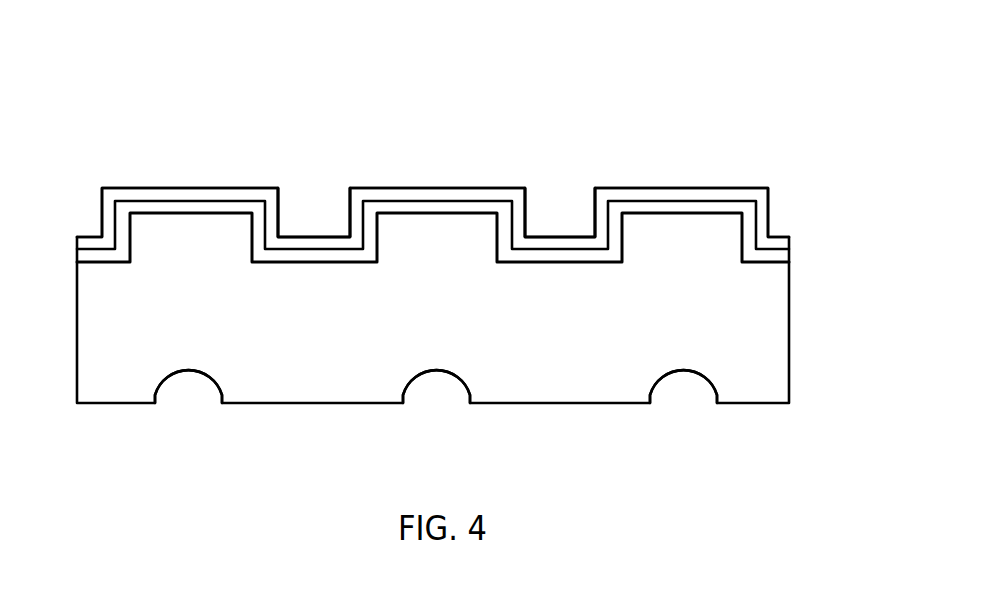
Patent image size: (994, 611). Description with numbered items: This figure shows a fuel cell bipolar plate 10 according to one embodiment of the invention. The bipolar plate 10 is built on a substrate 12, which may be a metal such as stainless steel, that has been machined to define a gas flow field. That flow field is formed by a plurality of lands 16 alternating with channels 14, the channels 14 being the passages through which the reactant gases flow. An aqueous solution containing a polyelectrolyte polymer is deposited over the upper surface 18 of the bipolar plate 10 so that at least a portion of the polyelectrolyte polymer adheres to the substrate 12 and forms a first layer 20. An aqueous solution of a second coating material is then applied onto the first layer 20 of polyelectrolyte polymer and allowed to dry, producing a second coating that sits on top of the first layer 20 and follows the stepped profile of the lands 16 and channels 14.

The fuel cell bipolar plate 10 is at (631, 116).
The substrate 12 is at (767, 318).
The channels 14 is at (306, 220).
The lands 16 is at (193, 218).
The upper surface 18 is at (113, 261).
The first layer 20 is at (122, 217).